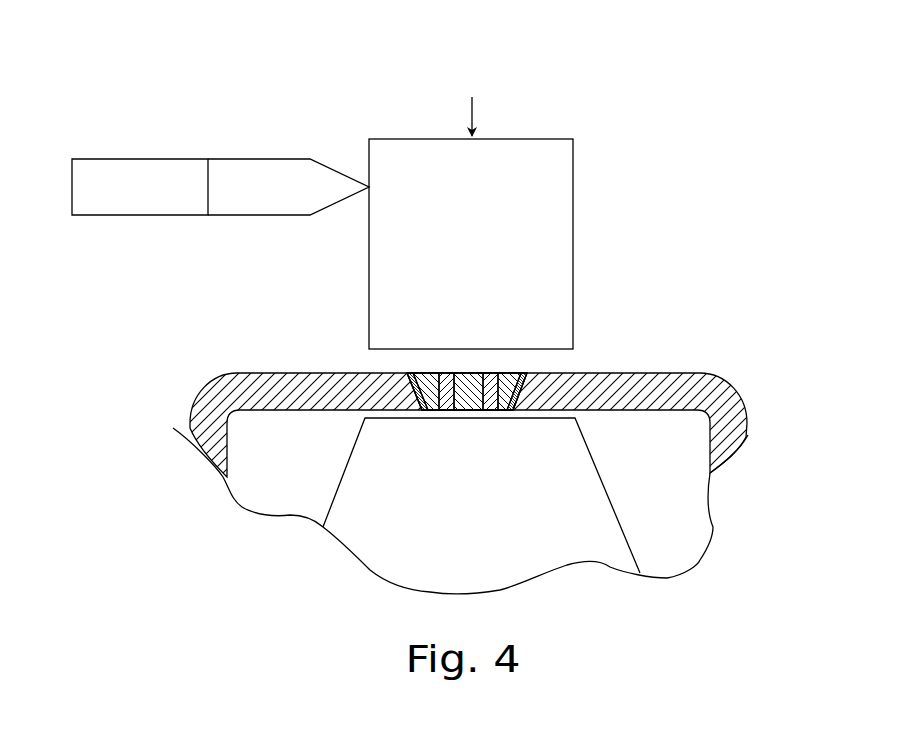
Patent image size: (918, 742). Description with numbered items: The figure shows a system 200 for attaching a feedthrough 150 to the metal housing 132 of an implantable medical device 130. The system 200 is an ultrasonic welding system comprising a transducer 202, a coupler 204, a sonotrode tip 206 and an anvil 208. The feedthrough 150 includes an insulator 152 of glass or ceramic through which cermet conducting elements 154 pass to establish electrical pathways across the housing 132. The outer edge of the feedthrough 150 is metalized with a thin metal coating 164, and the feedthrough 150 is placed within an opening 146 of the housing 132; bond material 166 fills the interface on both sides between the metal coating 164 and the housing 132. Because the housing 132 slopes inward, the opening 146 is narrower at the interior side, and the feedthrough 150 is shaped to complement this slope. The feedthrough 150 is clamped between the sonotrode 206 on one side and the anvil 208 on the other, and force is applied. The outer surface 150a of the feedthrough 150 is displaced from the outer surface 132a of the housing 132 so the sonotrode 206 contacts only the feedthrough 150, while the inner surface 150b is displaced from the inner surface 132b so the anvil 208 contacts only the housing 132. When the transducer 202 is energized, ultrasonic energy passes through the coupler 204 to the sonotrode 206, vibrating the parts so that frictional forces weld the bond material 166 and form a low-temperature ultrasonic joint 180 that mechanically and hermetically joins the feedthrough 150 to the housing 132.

The implantable medical device 130 is at (477, 424).
The metal housing 132 is at (460, 458).
The outer surface of metal housing 132a is at (285, 372).
The inner surface of metal housing 132b is at (265, 412).
The opening 146 is at (474, 415).
The feedthrough 150 is at (470, 385).
The outer surface of feedthrough 150a is at (435, 373).
The inner surface of feedthrough 150b is at (442, 412).
The insulator 152 is at (422, 373).
The conducting elements 154 is at (447, 373).
The metal coating 164 is at (408, 373).
The bond material 166 is at (527, 373).
The ultrasonic joint 180 is at (433, 415).
The system 200 is at (368, 212).
The transducer 202 is at (110, 158).
The coupler 204 is at (229, 158).
The sonotrode tip 206 is at (574, 209).
The anvil 208 is at (598, 468).